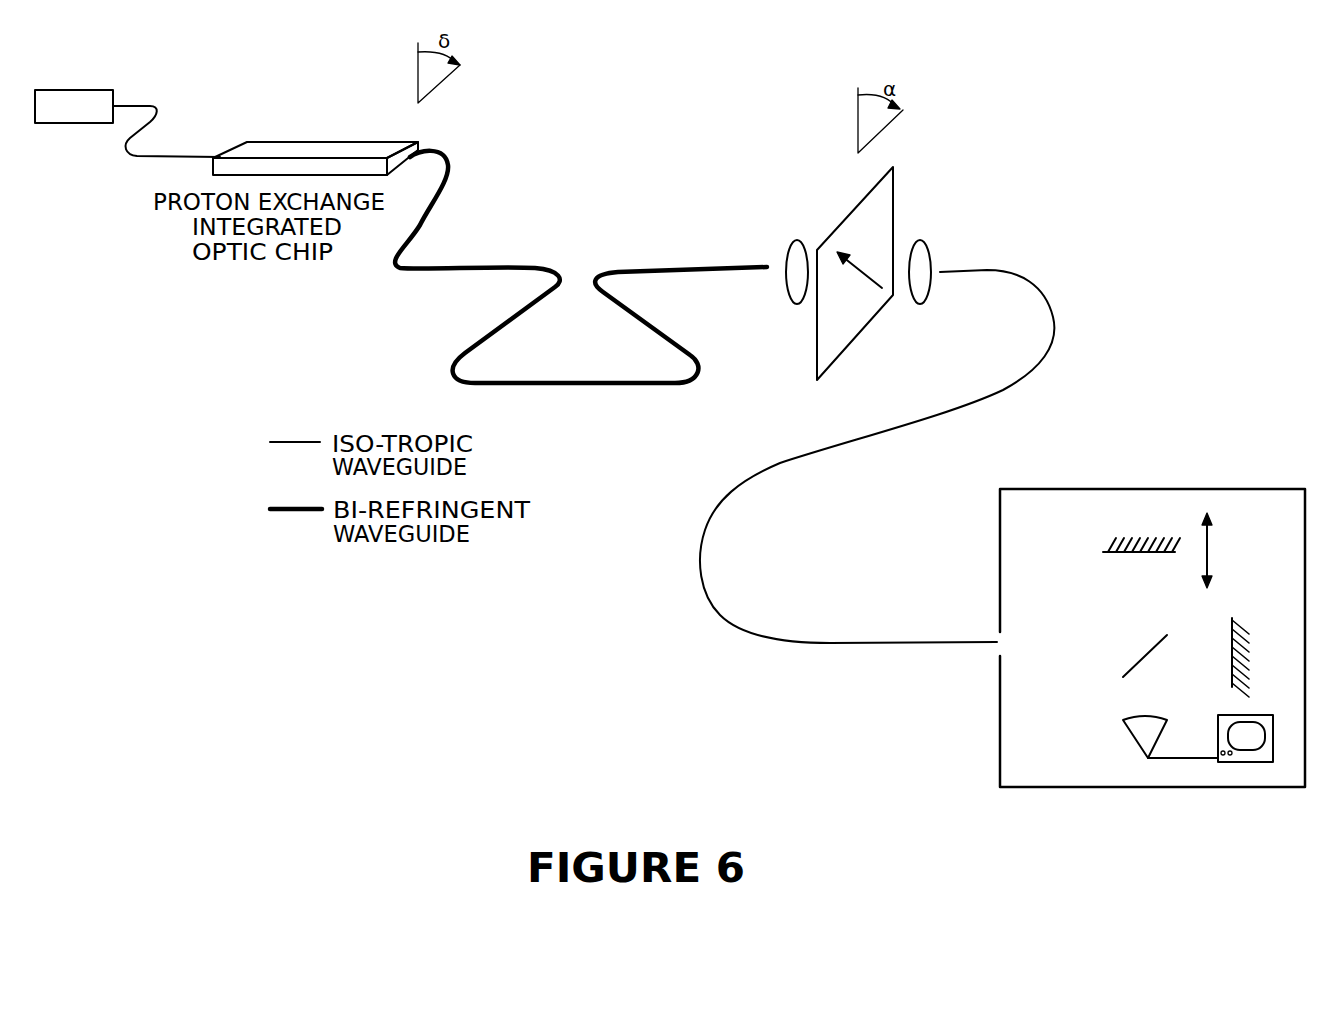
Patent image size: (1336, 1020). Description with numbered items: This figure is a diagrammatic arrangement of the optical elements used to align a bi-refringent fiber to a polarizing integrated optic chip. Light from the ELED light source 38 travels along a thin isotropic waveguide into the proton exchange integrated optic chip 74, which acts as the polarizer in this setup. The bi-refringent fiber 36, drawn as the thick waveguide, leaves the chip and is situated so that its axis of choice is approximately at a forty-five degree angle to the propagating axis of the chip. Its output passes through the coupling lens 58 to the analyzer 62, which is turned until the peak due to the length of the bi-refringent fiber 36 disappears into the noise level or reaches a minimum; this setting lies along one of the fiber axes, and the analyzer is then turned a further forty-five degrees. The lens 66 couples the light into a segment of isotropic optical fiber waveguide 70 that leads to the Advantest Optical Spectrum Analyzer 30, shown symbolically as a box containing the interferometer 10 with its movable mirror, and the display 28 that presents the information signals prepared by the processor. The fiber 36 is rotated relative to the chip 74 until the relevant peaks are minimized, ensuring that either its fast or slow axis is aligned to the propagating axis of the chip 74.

The ELED light source 38 is at (95, 90).
The integrated optic chip 74 is at (297, 142).
The bi-refringent fiber 36 is at (408, 265).
The coupling lens 58 is at (787, 250).
The analyzer 62 is at (815, 363).
The lens 66 is at (930, 257).
The isotropic optical fiber waveguide 70 is at (957, 412).
The Advantest Optical Spectrum Analyzer 30 is at (1135, 489).
The interferometer 10 is at (1229, 542).
The display 28 is at (1218, 733).